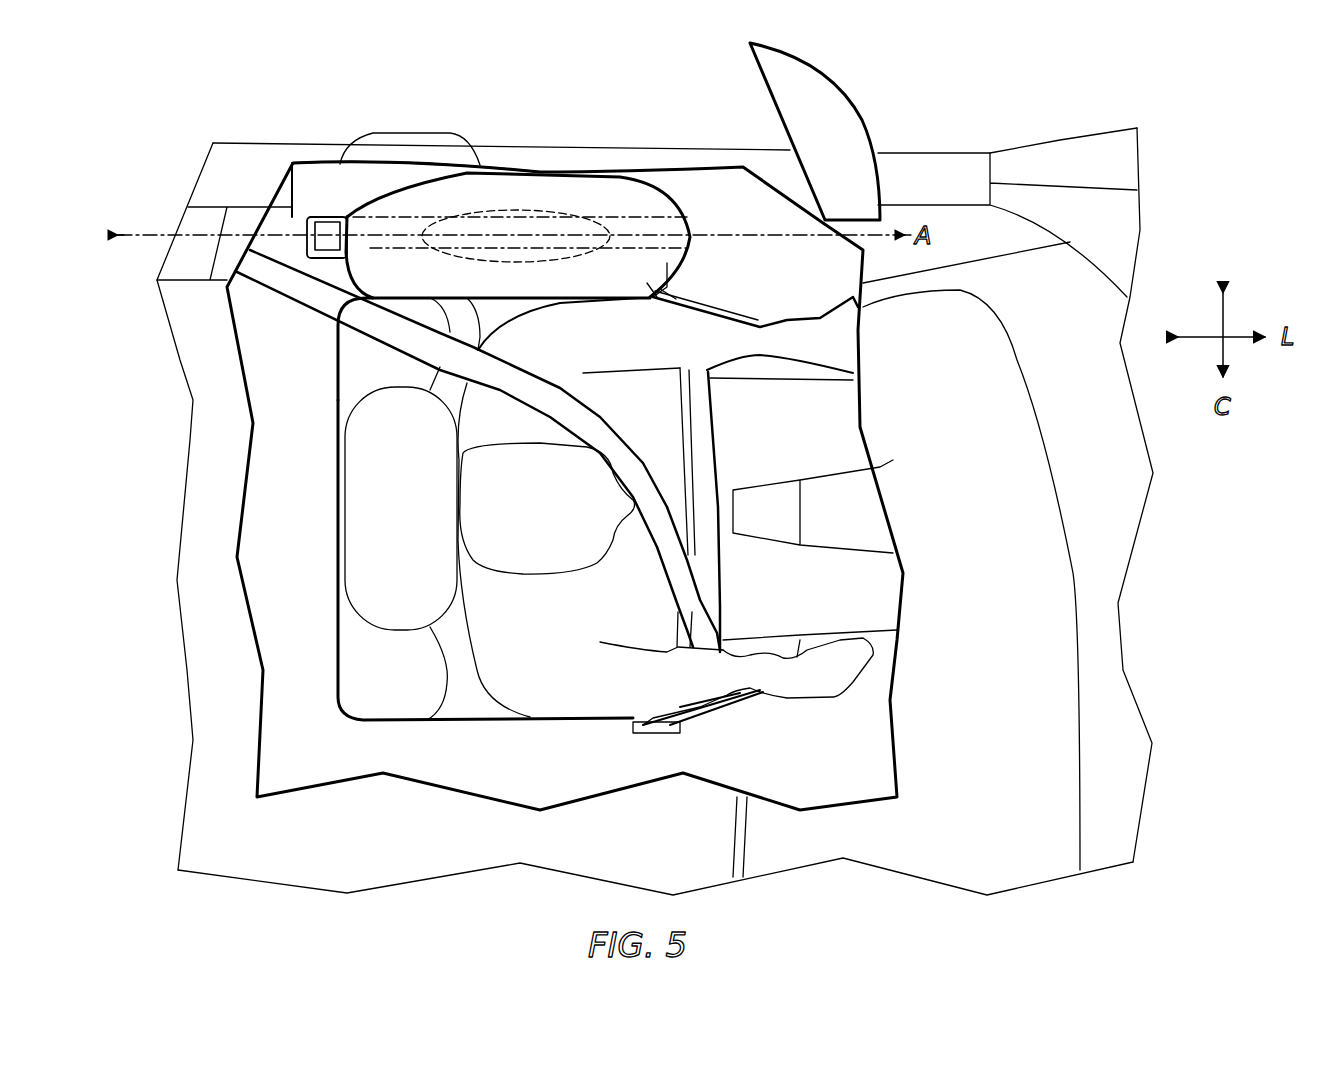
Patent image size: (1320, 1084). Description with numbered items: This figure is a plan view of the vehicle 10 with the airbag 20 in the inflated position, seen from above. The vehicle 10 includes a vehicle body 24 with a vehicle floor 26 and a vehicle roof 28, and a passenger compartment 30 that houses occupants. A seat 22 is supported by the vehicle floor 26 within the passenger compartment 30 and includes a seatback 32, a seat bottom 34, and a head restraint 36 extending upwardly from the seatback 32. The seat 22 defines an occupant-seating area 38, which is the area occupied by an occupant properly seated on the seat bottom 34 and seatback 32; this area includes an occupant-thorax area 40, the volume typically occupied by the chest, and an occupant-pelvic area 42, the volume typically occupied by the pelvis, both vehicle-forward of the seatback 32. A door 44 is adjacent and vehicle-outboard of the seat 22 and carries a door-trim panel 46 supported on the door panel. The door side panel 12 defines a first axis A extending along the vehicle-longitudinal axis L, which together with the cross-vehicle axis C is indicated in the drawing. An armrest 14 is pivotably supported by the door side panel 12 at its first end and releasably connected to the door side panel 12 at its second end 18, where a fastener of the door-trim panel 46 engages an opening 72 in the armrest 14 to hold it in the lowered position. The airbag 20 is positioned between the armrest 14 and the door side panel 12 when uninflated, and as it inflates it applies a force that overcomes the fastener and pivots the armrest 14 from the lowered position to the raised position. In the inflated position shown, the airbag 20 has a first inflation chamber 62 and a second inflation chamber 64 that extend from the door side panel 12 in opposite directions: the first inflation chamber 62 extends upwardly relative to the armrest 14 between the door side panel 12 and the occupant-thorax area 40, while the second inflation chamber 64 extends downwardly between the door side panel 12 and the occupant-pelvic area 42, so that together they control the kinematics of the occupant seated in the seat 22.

The vehicle 10 is at (1004, 113).
The door side panel 12 is at (363, 183).
The armrest 14 is at (315, 272).
The second end 18 is at (303, 249).
The airbag 20 is at (668, 185).
The vehicle seat 22 is at (429, 727).
The vehicle body 24 is at (548, 141).
The vehicle floor 26 is at (313, 747).
The vehicle roof 28 is at (220, 683).
The passenger compartment 30 is at (285, 468).
The seatback 32 is at (380, 667).
The seat bottom 34 is at (727, 710).
The head restraint 36 is at (387, 545).
The occupant-seating area 38 is at (730, 512).
The occupant-thorax area 40 is at (557, 297).
The occupant-pelvic area 42 is at (699, 293).
The door 44 is at (740, 145).
The door-trim panel 46 is at (322, 172).
The first inflation chamber 62 is at (517, 193).
The second inflation chamber 64 is at (663, 287).
The opening 72 is at (304, 229).